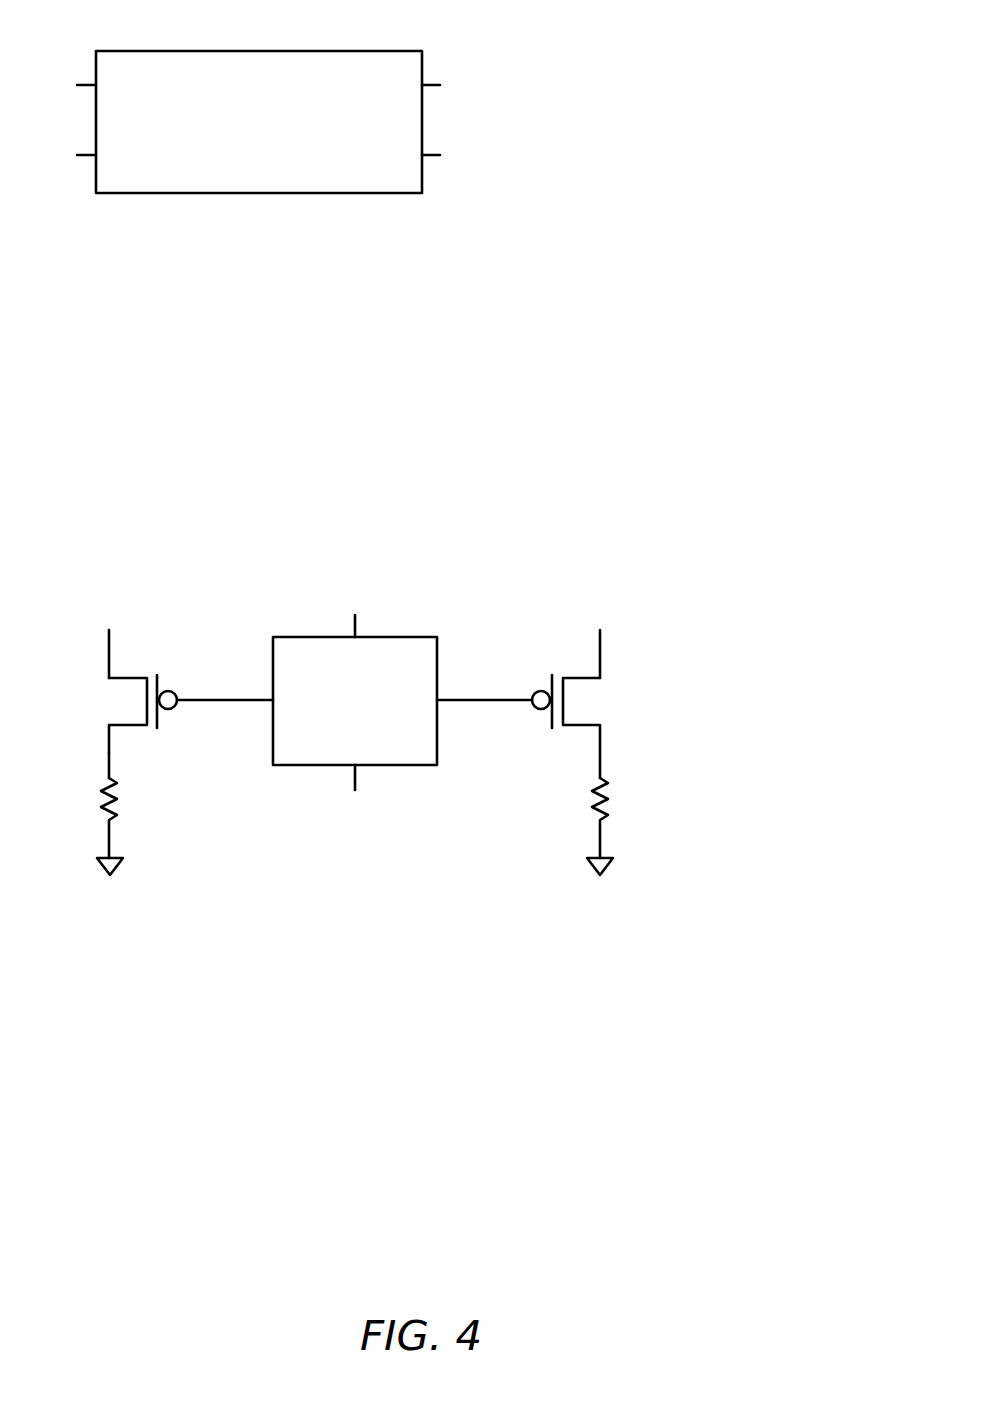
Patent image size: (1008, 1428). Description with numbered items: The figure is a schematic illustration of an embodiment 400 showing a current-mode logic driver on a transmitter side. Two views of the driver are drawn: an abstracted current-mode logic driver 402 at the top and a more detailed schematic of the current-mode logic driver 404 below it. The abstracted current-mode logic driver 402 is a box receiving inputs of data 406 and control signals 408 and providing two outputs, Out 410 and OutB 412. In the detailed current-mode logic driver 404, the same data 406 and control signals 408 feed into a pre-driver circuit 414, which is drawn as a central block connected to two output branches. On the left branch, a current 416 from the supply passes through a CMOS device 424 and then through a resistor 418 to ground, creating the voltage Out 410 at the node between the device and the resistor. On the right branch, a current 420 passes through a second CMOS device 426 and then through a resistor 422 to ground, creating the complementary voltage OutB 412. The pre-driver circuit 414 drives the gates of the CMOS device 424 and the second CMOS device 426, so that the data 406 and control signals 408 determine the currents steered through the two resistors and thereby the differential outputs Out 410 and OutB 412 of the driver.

The embodiment showing a current-mode logic driver 400 is at (469, 599).
The abstracted current-mode logic driver 402 is at (518, 201).
The current-mode logic driver 404 is at (478, 787).
The data 406 is at (137, 70).
The control signals 408 is at (168, 172).
The Out 410 is at (58, 762).
The OutB 412 is at (650, 753).
The pre-driver circuit 414 is at (375, 747).
The current 416 is at (183, 624).
The resistor 418 is at (120, 800).
The current 420 is at (670, 624).
The resistor 422 is at (590, 800).
The CMOS device 424 is at (127, 700).
The second CMOS device 426 is at (592, 702).